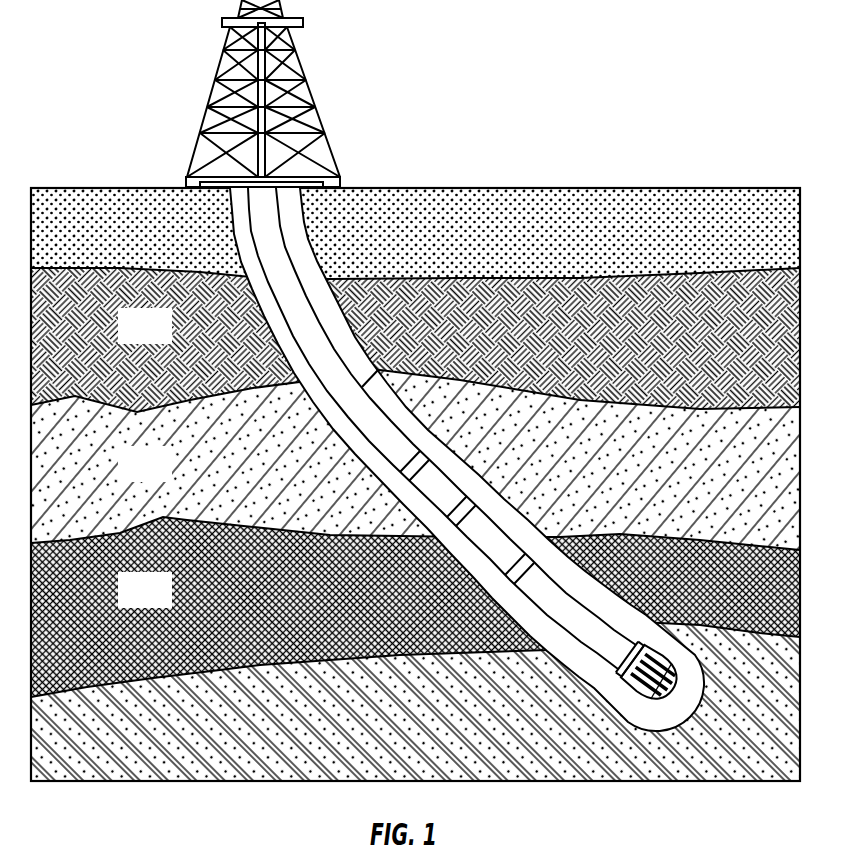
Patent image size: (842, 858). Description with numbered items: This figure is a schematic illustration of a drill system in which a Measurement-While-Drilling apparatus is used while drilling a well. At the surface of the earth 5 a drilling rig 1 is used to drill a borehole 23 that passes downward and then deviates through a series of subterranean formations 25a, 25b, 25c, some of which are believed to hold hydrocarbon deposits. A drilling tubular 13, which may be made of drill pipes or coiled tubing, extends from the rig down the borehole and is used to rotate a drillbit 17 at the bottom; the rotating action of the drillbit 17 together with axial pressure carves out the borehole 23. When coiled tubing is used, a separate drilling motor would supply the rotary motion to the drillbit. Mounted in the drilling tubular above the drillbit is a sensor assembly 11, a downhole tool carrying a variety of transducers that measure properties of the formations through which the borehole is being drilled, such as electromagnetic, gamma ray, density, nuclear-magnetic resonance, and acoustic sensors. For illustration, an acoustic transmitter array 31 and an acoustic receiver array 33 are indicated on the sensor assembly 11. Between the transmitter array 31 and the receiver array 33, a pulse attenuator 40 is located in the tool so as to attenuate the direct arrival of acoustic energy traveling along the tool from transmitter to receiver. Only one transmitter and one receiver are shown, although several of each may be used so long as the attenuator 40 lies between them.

The drilling rig 1 is at (303, 72).
The surface of the earth 5 is at (622, 189).
The borehole 23 is at (320, 250).
The drilling tubular 13 is at (384, 364).
The sensor assembly 11 is at (521, 481).
The acoustic receiver array 33 is at (400, 477).
The pulse attenuator 40 is at (418, 545).
The acoustic transmitter array 31 is at (474, 600).
The drillbit 17 is at (677, 672).
The subterranean formation 25a is at (166, 340).
The subterranean formation 25b is at (166, 478).
The subterranean formation 25c is at (166, 604).